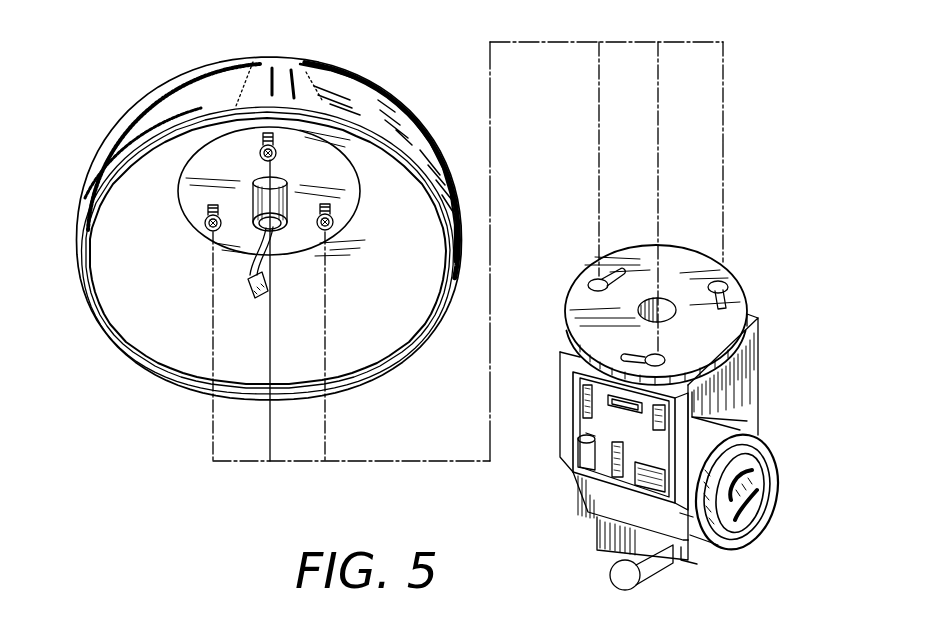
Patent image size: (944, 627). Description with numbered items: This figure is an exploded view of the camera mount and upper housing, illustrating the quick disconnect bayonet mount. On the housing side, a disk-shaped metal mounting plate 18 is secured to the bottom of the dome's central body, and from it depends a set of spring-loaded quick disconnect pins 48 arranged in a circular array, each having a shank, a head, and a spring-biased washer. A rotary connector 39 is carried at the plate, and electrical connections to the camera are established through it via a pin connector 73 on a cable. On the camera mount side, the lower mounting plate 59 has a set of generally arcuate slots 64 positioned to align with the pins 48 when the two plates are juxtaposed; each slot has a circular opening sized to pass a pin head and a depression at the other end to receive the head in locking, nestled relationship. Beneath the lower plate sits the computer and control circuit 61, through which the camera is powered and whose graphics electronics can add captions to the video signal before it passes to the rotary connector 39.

The mounting plate 18 is at (350, 184).
The rotary connector 39 is at (256, 204).
The quick disconnect pins 48 is at (278, 161).
The pin connector 73 is at (248, 284).
The lower mounting plate 59 is at (688, 250).
The arcuate slots 64 is at (582, 280).
The computer and control circuit 61 is at (608, 462).